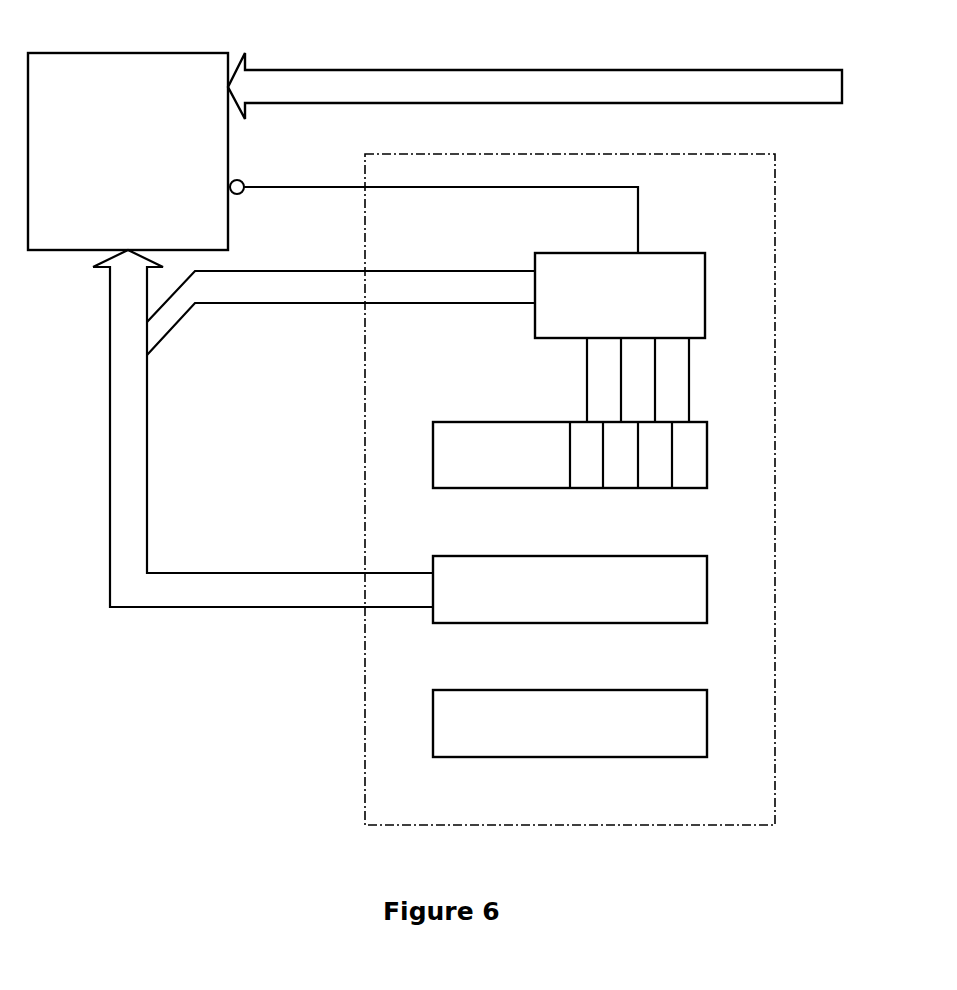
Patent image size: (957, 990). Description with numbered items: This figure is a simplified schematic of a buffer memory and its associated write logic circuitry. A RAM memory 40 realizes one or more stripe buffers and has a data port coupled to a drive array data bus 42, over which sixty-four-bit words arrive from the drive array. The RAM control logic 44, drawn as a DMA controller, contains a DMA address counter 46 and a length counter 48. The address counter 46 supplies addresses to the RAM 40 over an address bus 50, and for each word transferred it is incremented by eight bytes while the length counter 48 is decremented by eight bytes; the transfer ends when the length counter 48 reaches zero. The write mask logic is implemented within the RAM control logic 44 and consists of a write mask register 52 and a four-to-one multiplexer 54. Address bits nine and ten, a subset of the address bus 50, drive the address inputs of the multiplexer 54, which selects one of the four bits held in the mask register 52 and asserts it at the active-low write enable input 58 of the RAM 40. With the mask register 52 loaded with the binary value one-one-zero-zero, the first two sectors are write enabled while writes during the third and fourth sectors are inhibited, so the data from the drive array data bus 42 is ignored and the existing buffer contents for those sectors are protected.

The RAM memory 40 is at (128, 137).
The drive array data bus 42 is at (408, 70).
The RAM control logic 44 is at (461, 489).
The DMA address counter 46 is at (683, 556).
The length counter 48 is at (707, 722).
The address bus 50 is at (110, 512).
The write mask register 52 is at (707, 455).
The multiplexer 54 is at (705, 295).
The write enable input 58 is at (322, 187).